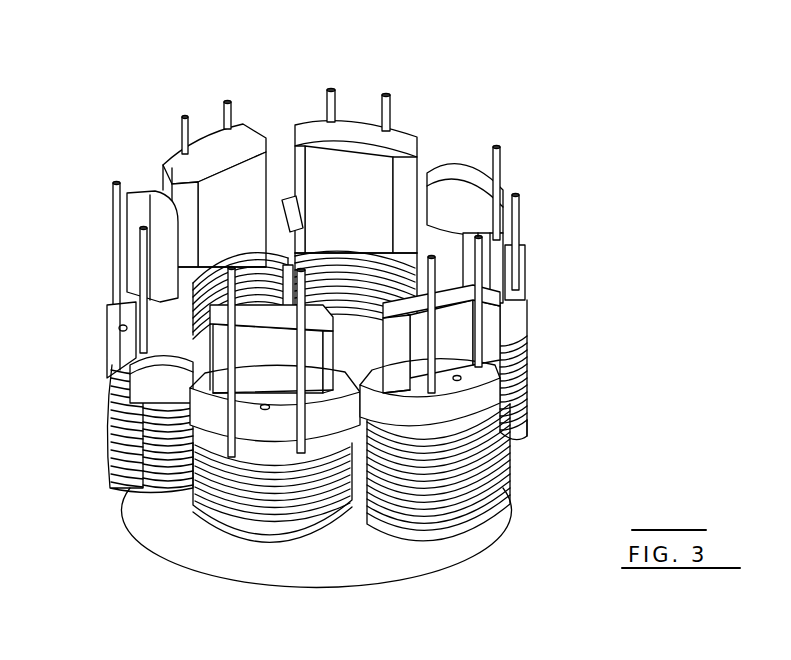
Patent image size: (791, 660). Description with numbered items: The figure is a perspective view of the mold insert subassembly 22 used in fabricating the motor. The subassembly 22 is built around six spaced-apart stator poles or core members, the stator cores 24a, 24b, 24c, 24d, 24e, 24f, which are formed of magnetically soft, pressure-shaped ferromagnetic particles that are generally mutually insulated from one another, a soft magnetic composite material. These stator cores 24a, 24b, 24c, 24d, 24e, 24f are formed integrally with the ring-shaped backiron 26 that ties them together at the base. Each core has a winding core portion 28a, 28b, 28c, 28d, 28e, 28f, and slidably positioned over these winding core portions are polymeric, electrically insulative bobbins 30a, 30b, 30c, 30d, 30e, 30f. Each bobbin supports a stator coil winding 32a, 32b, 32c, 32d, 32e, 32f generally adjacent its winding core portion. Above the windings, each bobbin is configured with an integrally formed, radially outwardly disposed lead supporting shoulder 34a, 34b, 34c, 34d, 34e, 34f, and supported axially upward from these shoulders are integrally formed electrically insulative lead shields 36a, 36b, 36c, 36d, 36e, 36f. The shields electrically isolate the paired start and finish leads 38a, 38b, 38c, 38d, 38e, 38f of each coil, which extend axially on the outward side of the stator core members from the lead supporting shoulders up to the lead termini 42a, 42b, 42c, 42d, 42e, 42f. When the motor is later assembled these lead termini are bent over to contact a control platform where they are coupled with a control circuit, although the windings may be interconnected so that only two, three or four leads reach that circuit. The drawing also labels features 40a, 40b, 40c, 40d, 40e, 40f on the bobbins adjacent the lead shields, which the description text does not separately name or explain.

The mold insert subassembly 22 is at (342, 318).
The ring-shaped backiron 26 is at (410, 553).
The stator core 24a is at (480, 407).
The stator core 24b is at (515, 298).
The stator core 24c is at (386, 173).
The stator core 24d is at (175, 188).
The stator core 24e is at (109, 337).
The stator core 24f is at (222, 413).
The winding core portion 28a is at (475, 472).
The winding core portion 28b is at (551, 368).
The winding core portion 28c is at (321, 173).
The winding core portion 28d is at (241, 188).
The winding core portion 28e is at (114, 423).
The winding core portion 28f is at (233, 525).
The bobbin 30a is at (458, 515).
The bobbin 30b is at (520, 434).
The bobbin 30c is at (402, 184).
The bobbin 30d is at (208, 163).
The bobbin 30e is at (110, 433).
The bobbin 30f is at (197, 515).
The stator coil winding 32a is at (463, 473).
The stator coil winding 32b is at (522, 372).
The stator coil winding 32c is at (355, 254).
The stator coil winding 32d is at (260, 278).
The stator coil winding 32e is at (113, 380).
The stator coil winding 32f is at (283, 518).
The lead supporting shoulder 34a is at (413, 490).
The lead supporting shoulder 34b is at (524, 277).
The lead supporting shoulder 34c is at (428, 165).
The lead supporting shoulder 34d is at (279, 197).
The lead supporting shoulder 34e is at (115, 347).
The lead supporting shoulder 34f is at (350, 500).
The lead shield 36a is at (452, 325).
The lead shield 36b is at (503, 205).
The lead shield 36c is at (403, 143).
The lead shield 36d is at (172, 156).
The lead shield 36e is at (130, 265).
The lead shield 36f is at (310, 315).
The start and finish leads 38a is at (480, 330).
The start and finish leads 38b is at (502, 149).
The start and finish leads 38c is at (331, 90).
The start and finish leads 38d is at (180, 118).
The start and finish leads 38e is at (133, 295).
The start and finish leads 38f is at (302, 268).
The terminal mounting face 40a is at (458, 305).
The terminal mounting face 40b is at (468, 178).
The terminal mounting face 40c is at (357, 130).
The terminal mounting face 40d is at (205, 155).
The terminal mounting face 40e is at (135, 210).
The terminal mounting face 40f is at (247, 325).
The lead terminus 42a is at (486, 312).
The lead terminus 42b is at (521, 207).
The lead terminus 42c is at (390, 98).
The lead terminus 42d is at (226, 103).
The lead terminus 42e is at (110, 200).
The lead terminus 42f is at (233, 266).